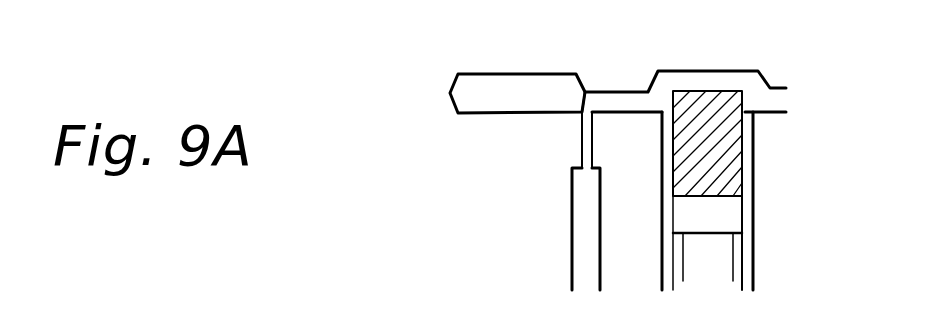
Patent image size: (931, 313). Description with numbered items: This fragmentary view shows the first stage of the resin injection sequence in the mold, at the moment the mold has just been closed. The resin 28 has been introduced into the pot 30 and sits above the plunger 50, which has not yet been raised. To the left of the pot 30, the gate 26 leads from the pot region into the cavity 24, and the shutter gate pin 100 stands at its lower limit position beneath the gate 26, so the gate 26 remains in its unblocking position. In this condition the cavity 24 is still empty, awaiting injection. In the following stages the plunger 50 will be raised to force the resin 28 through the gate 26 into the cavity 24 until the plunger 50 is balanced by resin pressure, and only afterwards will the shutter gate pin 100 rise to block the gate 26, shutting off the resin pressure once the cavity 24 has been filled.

The cavity 24 is at (498, 92).
The gate 26 is at (626, 98).
The resin 28 is at (718, 98).
The pot 30 is at (753, 130).
The plunger 50 is at (723, 218).
The shutter gate pin 100 is at (572, 241).